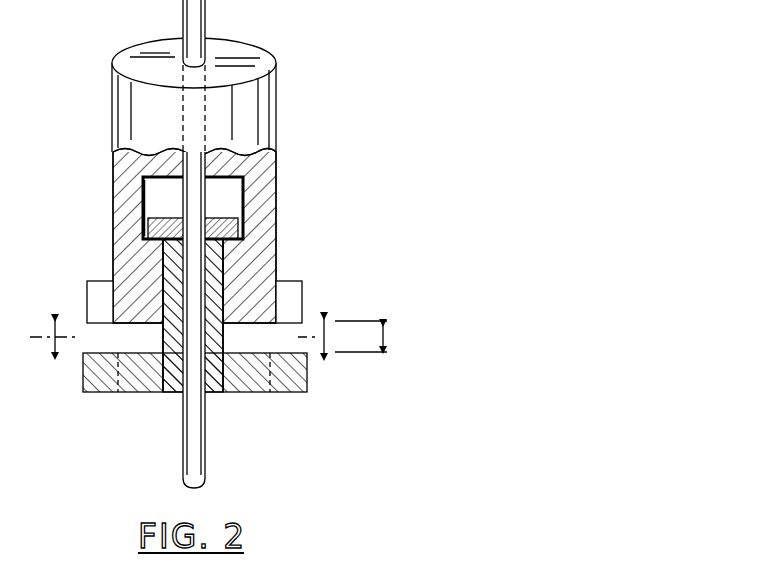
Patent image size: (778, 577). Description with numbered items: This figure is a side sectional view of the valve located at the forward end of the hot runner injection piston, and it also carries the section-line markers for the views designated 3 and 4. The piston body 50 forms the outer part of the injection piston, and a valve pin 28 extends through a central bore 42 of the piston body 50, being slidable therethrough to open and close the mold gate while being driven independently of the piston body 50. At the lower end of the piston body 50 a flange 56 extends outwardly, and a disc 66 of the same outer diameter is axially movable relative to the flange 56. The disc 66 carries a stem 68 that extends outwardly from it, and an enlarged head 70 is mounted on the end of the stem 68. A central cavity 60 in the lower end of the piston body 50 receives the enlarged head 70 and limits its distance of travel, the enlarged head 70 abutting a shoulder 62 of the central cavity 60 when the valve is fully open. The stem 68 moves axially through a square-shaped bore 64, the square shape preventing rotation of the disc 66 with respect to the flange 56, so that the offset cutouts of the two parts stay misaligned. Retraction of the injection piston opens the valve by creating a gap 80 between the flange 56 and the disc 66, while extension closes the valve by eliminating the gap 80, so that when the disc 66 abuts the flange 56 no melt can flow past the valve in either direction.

The valve pin 28 is at (192, 17).
The piston body 50 is at (250, 100).
The central bore 42 is at (205, 164).
The central cavity 60 is at (232, 200).
The enlarged head 70 is at (157, 218).
The shoulder 62 is at (148, 228).
The stem 68 is at (165, 272).
The square-shaped bore 64 is at (227, 267).
The flange 56 is at (297, 284).
The disc 66 is at (248, 390).
The gap 80 is at (384, 337).
The section line 3 is at (180, 320).
The section line 4 is at (188, 385).